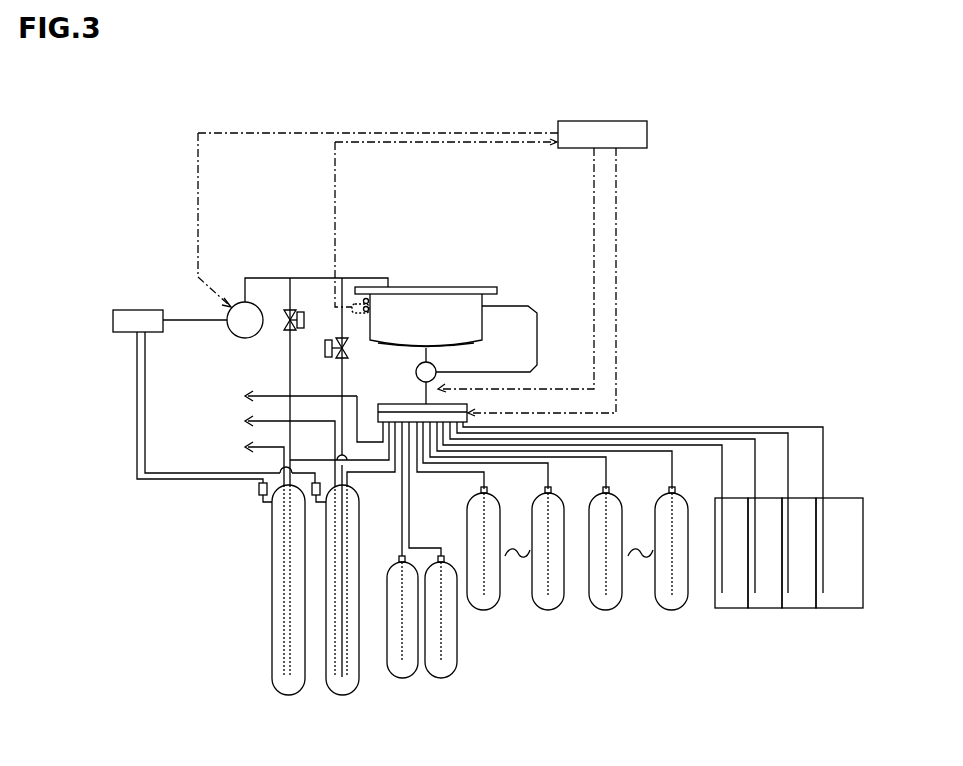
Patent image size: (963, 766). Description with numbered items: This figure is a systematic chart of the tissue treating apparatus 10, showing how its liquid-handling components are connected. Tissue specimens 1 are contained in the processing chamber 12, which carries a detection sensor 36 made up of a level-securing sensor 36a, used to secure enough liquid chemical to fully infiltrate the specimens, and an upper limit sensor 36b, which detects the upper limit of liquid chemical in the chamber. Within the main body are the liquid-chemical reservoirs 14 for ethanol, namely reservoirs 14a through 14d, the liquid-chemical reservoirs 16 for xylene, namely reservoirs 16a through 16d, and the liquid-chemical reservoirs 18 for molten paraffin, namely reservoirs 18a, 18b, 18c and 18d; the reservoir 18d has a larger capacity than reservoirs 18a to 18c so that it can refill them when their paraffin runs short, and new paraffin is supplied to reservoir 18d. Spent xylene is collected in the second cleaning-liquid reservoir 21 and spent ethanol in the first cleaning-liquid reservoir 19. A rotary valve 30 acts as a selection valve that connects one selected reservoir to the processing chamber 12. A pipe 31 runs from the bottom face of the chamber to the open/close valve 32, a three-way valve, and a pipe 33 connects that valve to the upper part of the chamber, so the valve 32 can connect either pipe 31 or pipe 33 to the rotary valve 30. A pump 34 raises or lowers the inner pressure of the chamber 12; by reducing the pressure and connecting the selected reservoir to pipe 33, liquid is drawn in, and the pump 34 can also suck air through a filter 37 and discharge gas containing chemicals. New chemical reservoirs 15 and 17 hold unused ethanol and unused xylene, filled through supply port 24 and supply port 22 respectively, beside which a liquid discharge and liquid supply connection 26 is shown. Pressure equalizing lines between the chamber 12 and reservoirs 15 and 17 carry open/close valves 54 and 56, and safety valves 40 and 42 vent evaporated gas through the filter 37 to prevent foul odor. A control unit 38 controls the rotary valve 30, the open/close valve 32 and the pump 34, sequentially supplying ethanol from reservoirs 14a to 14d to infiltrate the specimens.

The tissue treating apparatus 10 is at (401, 92).
The control unit 38 is at (628, 121).
The filter 37 is at (135, 310).
The pump 34 is at (240, 326).
The open/close valve 54 is at (288, 311).
The open/close valve 56 is at (336, 359).
The detection sensor 36 is at (384, 255).
The level-securing sensor 36a is at (370, 308).
The upper limit sensor 36b is at (366, 298).
The processing chamber 12 is at (462, 300).
The substrate 1 is at (410, 345).
The pipe 33 is at (537, 340).
The pipe 31 is at (432, 356).
The open/close valve 32 is at (416, 370).
The rotary valve 30 is at (405, 403).
The liquid discharge and supply line 26 is at (252, 395).
The supply port 22 is at (252, 420).
The supply port 24 is at (252, 446).
The safety valve 40 is at (258, 489).
The safety valve 42 is at (311, 491).
The new chemical reservoir 15 is at (288, 601).
The new chemical reservoir 17 is at (342, 601).
The second cleaning-liquid reservoir 21 is at (402, 680).
The first cleaning-liquid reservoir 19 is at (453, 680).
The liquid-chemical reservoirs 14 is at (518, 577).
The liquid-chemical reservoir 14a is at (483, 559).
The liquid-chemical reservoir 14d is at (550, 559).
The liquid-chemical reservoirs 16 is at (638, 577).
The liquid-chemical reservoir 16a is at (605, 559).
The liquid-chemical reservoir 16d is at (670, 559).
The liquid-chemical reservoirs 18 is at (790, 584).
The liquid-chemical reservoir 18a is at (731, 564).
The liquid-chemical reservoir 18b is at (765, 564).
The liquid-chemical reservoir 18c is at (799, 564).
The liquid-chemical reservoir 18d is at (839, 564).